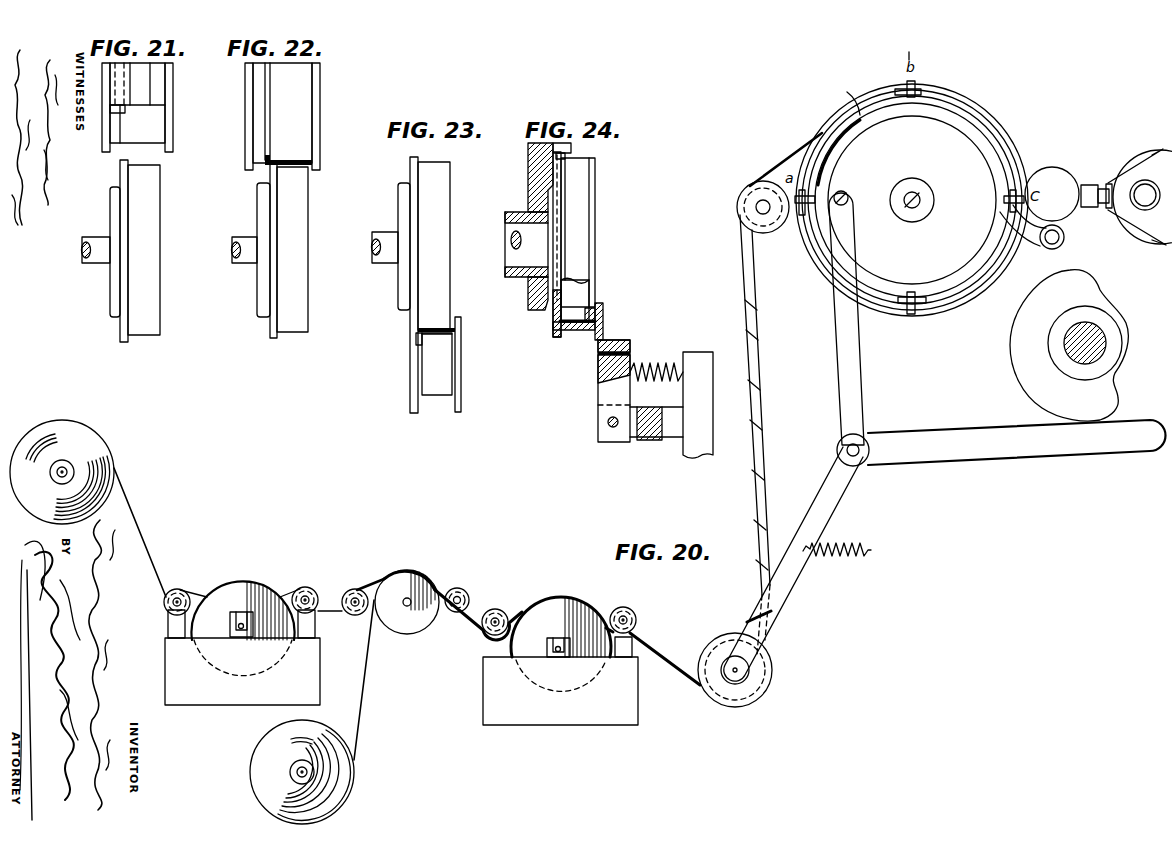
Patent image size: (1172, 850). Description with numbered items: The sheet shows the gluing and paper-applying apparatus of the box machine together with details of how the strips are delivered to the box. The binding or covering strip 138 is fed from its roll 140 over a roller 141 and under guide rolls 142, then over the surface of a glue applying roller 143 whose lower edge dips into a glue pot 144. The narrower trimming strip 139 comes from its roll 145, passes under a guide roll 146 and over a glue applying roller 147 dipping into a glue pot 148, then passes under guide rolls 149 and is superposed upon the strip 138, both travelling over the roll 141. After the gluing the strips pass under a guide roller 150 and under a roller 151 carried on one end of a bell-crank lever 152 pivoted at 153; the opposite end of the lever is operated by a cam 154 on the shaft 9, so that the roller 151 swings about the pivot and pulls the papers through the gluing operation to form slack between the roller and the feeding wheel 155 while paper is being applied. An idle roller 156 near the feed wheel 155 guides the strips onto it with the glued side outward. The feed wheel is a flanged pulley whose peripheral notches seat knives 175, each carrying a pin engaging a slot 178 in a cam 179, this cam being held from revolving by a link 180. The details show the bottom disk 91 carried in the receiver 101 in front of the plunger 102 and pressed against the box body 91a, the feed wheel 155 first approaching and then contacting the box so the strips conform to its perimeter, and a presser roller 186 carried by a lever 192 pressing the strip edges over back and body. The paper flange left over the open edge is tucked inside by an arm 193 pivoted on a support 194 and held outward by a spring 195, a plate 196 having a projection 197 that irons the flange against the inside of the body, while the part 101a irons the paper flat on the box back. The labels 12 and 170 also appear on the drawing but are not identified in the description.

In FIG. 20, the shaft 9 is at (1082, 360).
In FIG. 20, the motor 12 is at (1140, 197).
In FIG. 21, the box bottom disk 91 is at (121, 333).
In FIG. 22, the box bottom disk 91 is at (270, 330).
In FIG. 23, the box bottom disk 91 is at (418, 290).
In FIG. 24, the box bottom disk 91 is at (578, 240).
In FIG. 20, the box bottom disk 91 is at (1057, 170).
In FIG. 21, the box body 91a is at (148, 338).
In FIG. 22, the box body 91a is at (290, 336).
In FIG. 23, the box body 91a is at (447, 220).
In FIG. 24, the box body 91a is at (553, 322).
In FIG. 24, the receiver 101 is at (540, 178).
In FIG. 24, the ironing part 101a is at (530, 167).
In FIG. 21, the plunger 102 is at (110, 208).
In FIG. 22, the plunger 102 is at (257, 208).
In FIG. 23, the plunger 102 is at (398, 203).
In FIG. 24, the plunger 102 is at (540, 195).
In FIG. 21, the binding strip 138 is at (160, 97).
In FIG. 22, the binding strip 138 is at (308, 162).
In FIG. 23, the binding strip 138 is at (438, 328).
In FIG. 24, the binding strip 138 is at (562, 331).
In FIG. 20, the binding strip 138 is at (361, 695).
In FIG. 21, the trimming strip 139 is at (150, 80).
In FIG. 22, the trimming strip 139 is at (297, 160).
In FIG. 23, the trimming strip 139 is at (445, 338).
In FIG. 24, the trimming strip 139 is at (570, 333).
In FIG. 20, the trimming strip 139 is at (140, 522).
In FIG. 20, the roll 140 is at (302, 772).
In FIG. 20, the roller 141 is at (398, 602).
In FIG. 20, the guide rolls 142 is at (488, 608).
In FIG. 20, the glue applying roller 143 is at (571, 627).
In FIG. 20, the glue pot 144 is at (560, 691).
In FIG. 20, the roll 145 is at (62, 472).
In FIG. 20, the guide roll 146 is at (178, 589).
In FIG. 20, the glue applying roller 147 is at (241, 610).
In FIG. 20, the glue pot 148 is at (242, 671).
In FIG. 20, the guide rolls 149 is at (342, 597).
In FIG. 20, the guide roller 150 is at (624, 607).
In FIG. 20, the roller 151 is at (738, 700).
In FIG. 20, the bell-crank lever 152 is at (797, 564).
In FIG. 20, the pivot 153 is at (860, 466).
In FIG. 20, the cam 154 is at (1069, 345).
In FIG. 21, the feed wheel 155 is at (137, 107).
In FIG. 22, the feed wheel 155 is at (282, 116).
In FIG. 20, the feed wheel 155 is at (912, 200).
In FIG. 20, the idle roller 156 is at (750, 206).
In FIG. 20, the hub 170 is at (918, 190).
In FIG. 20, the knife 175 is at (918, 82).
In FIG. 20, the slot 178 is at (835, 138).
In FIG. 20, the cam 179 is at (838, 99).
In FIG. 20, the link 180 is at (858, 378).
In FIG. 23, the presser roller 186 is at (438, 364).
In FIG. 20, the presser roller 186 is at (1064, 240).
In FIG. 20, the lever 192 is at (1022, 240).
In FIG. 24, the arm 193 is at (598, 398).
In FIG. 20, the arm 193 is at (1103, 186).
In FIG. 24, the pivot support 194 is at (609, 424).
In FIG. 24, the spring 195 is at (643, 365).
In FIG. 24, the plate 196 is at (600, 322).
In FIG. 20, the plate 196 is at (1085, 183).
In FIG. 24, the projection 197 is at (590, 312).